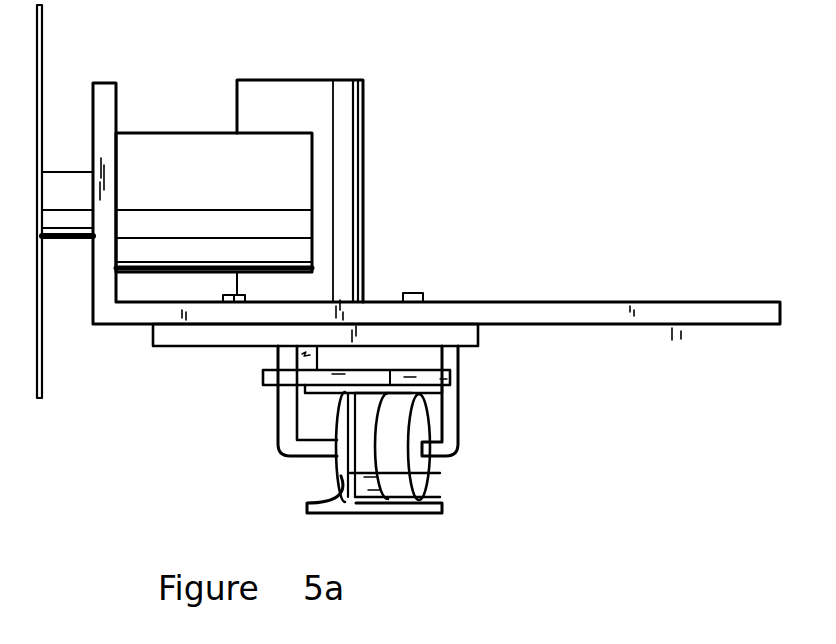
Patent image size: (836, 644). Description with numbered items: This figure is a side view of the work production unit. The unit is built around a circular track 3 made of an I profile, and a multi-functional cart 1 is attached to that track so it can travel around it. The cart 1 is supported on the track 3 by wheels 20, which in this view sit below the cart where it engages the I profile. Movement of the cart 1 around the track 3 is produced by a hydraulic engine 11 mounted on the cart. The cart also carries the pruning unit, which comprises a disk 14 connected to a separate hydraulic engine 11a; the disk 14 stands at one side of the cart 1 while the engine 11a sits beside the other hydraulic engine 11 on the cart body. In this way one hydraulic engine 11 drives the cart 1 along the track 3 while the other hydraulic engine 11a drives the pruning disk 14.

The multi-functional cart 1 is at (668, 300).
The circular track 3 is at (337, 394).
The hydraulic engine 11 is at (305, 88).
The hydraulic engine 11a is at (184, 136).
The disk 14 is at (43, 30).
The wheels 20 is at (395, 463).